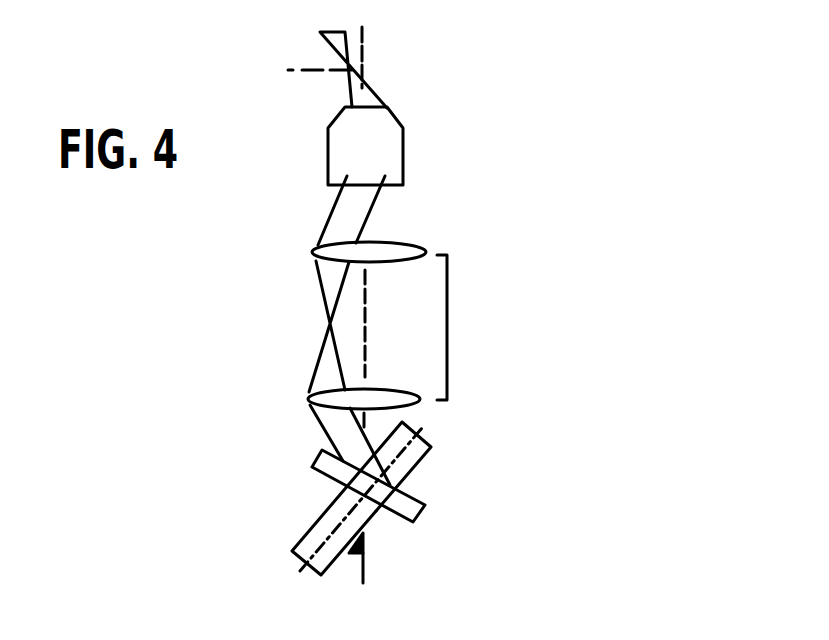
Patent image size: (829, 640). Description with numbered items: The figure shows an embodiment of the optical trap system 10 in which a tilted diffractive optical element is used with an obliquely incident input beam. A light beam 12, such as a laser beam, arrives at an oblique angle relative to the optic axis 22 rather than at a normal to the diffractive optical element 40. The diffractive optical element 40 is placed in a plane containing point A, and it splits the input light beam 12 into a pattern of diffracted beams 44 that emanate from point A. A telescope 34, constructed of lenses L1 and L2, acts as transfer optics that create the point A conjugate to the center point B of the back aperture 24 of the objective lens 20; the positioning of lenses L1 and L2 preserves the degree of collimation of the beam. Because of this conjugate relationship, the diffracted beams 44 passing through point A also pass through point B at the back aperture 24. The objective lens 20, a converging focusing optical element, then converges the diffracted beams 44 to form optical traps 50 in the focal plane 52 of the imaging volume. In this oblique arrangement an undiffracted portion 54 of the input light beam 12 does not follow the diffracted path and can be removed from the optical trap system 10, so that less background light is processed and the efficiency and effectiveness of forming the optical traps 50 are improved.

The optical trap system 10 is at (497, 233).
The light beam 12 is at (313, 524).
The objective lens 20 is at (390, 140).
The optical axis 22 is at (360, 564).
The back aperture 24 is at (346, 177).
The telescope 34 is at (398, 331).
The diffractive optical element 40 is at (398, 513).
The diffracted output beam 44 is at (340, 432).
The optical traps 50 is at (357, 60).
The focal plane 52 is at (303, 71).
The undiffracted portion 54 is at (427, 446).
The lens L1 is at (351, 393).
The lens L2 is at (354, 250).
The point A is at (407, 508).
The point B is at (367, 185).